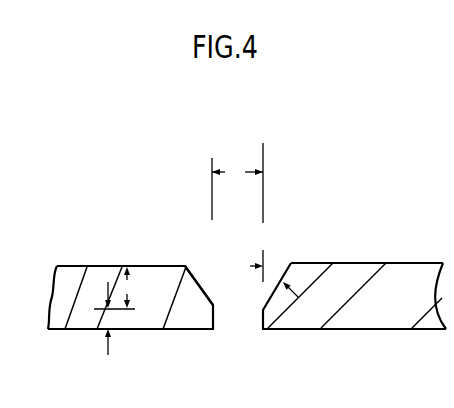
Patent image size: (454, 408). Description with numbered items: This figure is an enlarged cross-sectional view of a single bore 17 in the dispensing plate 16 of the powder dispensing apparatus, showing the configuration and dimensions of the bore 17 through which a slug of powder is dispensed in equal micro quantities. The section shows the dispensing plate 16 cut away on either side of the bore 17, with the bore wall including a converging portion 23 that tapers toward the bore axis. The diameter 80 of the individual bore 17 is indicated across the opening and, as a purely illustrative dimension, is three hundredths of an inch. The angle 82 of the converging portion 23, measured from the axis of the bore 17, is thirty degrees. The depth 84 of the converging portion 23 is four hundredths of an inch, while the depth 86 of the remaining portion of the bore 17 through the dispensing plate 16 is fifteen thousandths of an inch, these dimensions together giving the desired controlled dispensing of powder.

The dispensing plate 16 is at (68, 266).
The bore 17 is at (240, 317).
The converging portion 23 is at (197, 275).
The diameter 80 is at (233, 170).
The angle 82 is at (276, 269).
The depth of the converging portion 84 is at (128, 278).
The depth of the remaining portion 86 is at (103, 329).